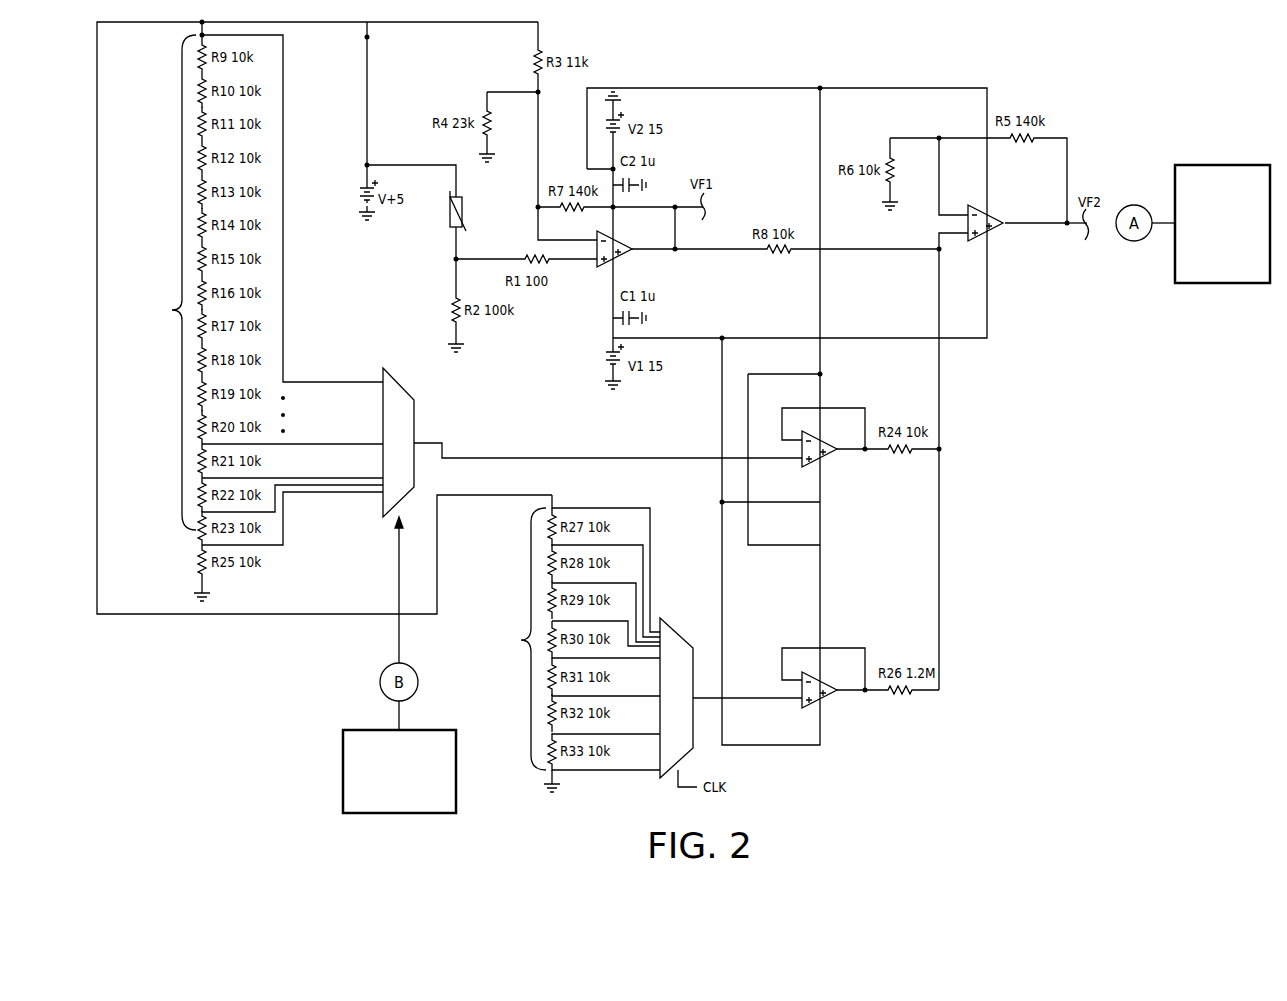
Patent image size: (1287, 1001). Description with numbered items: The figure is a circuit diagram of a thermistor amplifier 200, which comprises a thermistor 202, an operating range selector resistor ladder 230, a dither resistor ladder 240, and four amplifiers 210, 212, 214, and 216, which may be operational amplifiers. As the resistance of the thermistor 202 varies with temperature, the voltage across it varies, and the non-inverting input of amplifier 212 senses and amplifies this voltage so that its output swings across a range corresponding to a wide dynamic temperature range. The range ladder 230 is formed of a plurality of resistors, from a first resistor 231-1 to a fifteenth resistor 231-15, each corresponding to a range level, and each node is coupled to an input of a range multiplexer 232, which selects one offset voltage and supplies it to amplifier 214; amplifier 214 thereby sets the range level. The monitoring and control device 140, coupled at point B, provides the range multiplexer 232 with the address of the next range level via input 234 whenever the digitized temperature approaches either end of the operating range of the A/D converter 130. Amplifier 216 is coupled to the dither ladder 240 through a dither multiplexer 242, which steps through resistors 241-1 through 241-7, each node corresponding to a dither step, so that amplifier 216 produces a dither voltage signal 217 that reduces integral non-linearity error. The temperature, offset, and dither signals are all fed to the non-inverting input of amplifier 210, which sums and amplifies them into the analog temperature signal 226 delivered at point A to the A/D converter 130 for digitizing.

The A/D converter 130 is at (1221, 165).
The monitoring and control device 140 is at (343, 773).
The thermistor amplifier 200 is at (1082, 532).
The thermistor 202 is at (464, 212).
The amplifier 210 is at (985, 213).
The amplifier 212 is at (600, 270).
The amplifier 214 is at (822, 440).
The amplifier 216 is at (822, 680).
The dither voltage signal 217 is at (940, 614).
The analog temperature signal 226 is at (1087, 240).
The operating range selector resistor ladder 230 is at (252, 311).
The resistor 231-1 is at (202, 46).
The resistor 231-15 is at (202, 540).
The range multiplexer 232 is at (407, 358).
The input 234 is at (399, 633).
The dither resistor ladder 240 is at (563, 643).
The resistor 241-1 is at (552, 510).
The resistor 241-7 is at (552, 760).
The dither multiplexer 242 is at (671, 625).